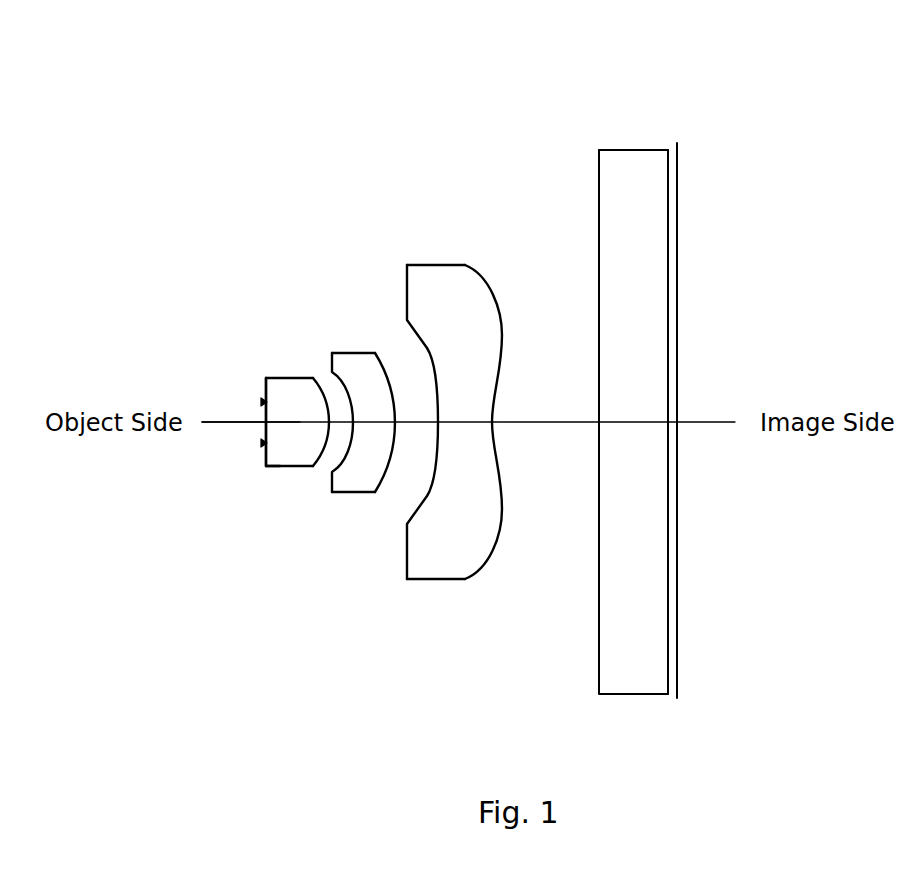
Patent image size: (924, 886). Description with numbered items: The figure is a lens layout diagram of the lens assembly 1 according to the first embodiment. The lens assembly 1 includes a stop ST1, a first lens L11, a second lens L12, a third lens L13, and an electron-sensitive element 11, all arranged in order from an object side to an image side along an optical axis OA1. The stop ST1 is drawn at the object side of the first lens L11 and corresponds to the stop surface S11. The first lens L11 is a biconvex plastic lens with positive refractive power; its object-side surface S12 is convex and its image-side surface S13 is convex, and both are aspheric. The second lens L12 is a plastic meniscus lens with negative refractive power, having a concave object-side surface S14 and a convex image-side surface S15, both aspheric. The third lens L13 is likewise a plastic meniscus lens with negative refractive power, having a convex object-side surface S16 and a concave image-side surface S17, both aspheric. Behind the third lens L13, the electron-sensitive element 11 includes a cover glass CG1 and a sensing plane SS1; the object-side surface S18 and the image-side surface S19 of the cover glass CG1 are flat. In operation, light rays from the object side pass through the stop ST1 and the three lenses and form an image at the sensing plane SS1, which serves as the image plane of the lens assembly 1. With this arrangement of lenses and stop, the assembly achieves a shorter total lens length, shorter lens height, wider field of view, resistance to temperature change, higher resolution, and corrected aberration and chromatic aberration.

The lens assembly 1 is at (151, 164).
The electron-sensitive element 11 is at (838, 71).
The stop ST1 is at (265, 400).
The optical axis OA1 is at (245, 423).
The first lens L11 is at (246, 443).
The second lens L12 is at (346, 454).
The third lens L13 is at (471, 425).
The stop surface S11 is at (265, 443).
The object-side surface of the first lens S12 is at (273, 466).
The image-side surface of the first lens S13 is at (313, 466).
The object-side surface of the second lens S14 is at (336, 468).
The image-side surface of the second lens S15 is at (384, 472).
The object-side surface of the third lens S16 is at (427, 502).
The image-side surface of the third lens S17 is at (502, 524).
The object-side surface of the cover glass S18 is at (600, 610).
The image-side surface of the cover glass S19 is at (668, 678).
The cover glass CG1 is at (669, 433).
The sensing plane SS1 is at (751, 390).